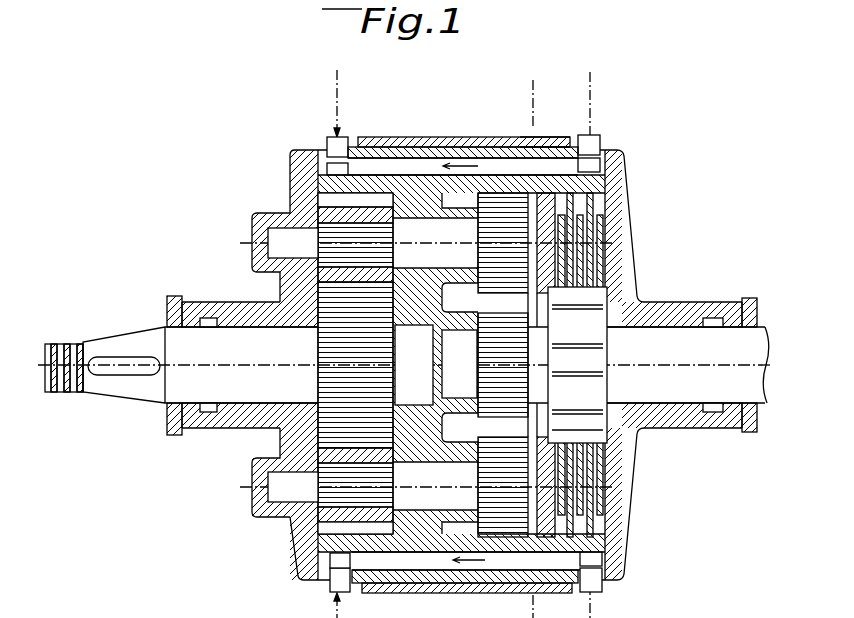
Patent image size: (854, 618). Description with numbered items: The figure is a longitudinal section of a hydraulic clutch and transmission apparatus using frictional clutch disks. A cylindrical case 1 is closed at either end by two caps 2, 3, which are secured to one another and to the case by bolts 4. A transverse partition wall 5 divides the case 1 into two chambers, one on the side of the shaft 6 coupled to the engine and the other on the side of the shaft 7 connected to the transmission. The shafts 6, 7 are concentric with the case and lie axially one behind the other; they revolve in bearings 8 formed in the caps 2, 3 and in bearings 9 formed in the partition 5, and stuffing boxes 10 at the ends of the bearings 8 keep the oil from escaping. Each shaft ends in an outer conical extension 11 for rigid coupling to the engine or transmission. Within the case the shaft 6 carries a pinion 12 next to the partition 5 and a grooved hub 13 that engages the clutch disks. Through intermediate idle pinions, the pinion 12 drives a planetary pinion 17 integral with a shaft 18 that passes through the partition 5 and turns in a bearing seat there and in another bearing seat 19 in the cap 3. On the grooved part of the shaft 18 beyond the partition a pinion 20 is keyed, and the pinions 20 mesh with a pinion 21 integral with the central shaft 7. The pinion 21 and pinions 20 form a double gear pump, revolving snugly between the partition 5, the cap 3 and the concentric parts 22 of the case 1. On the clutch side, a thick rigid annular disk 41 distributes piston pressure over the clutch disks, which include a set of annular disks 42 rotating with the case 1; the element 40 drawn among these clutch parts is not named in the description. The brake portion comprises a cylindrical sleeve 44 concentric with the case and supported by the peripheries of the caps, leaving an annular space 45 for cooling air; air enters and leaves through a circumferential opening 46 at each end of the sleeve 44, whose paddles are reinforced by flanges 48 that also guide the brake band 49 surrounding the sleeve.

The cylindrical case 1 is at (388, 553).
The cap 2 is at (326, 91).
The cap 3 is at (548, 88).
The bolts 4 is at (607, 87).
The transverse partition wall 5 is at (430, 533).
The shaft 6 is at (648, 365).
The shaft 7 is at (200, 365).
The bearings 8 is at (221, 430).
The bearings 9 is at (436, 365).
The stuffing boxes 10 is at (174, 437).
The outer conical extension 11 is at (119, 343).
The pinion 12 is at (485, 312).
The grooved hub 13 is at (583, 307).
The planetary pinion 17 is at (488, 248).
The shaft 18 is at (427, 364).
The bearing seat 19 is at (258, 214).
The pinion 20 is at (342, 202).
The pinion 21 is at (333, 336).
The concentric parts 22 is at (364, 187).
The friction disc 40 is at (566, 254).
The annular disk 41 is at (553, 197).
The annular disks 42 is at (577, 207).
The cylindrical sleeve 44 is at (543, 143).
The annular space 45 is at (472, 158).
The circumferential opening 46 is at (338, 148).
The flanges 48 is at (352, 140).
The brake band 49 is at (446, 145).